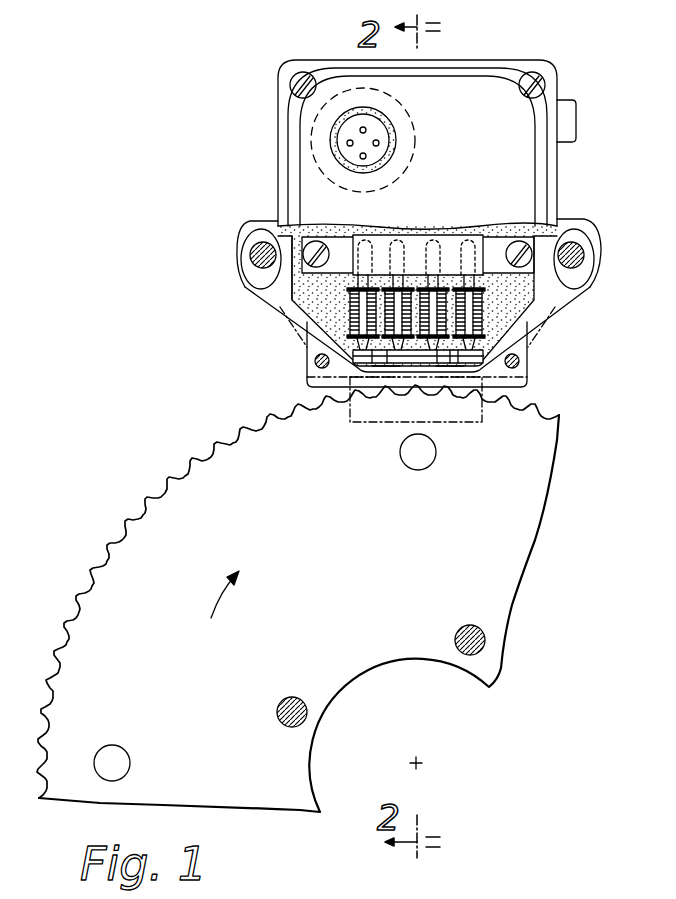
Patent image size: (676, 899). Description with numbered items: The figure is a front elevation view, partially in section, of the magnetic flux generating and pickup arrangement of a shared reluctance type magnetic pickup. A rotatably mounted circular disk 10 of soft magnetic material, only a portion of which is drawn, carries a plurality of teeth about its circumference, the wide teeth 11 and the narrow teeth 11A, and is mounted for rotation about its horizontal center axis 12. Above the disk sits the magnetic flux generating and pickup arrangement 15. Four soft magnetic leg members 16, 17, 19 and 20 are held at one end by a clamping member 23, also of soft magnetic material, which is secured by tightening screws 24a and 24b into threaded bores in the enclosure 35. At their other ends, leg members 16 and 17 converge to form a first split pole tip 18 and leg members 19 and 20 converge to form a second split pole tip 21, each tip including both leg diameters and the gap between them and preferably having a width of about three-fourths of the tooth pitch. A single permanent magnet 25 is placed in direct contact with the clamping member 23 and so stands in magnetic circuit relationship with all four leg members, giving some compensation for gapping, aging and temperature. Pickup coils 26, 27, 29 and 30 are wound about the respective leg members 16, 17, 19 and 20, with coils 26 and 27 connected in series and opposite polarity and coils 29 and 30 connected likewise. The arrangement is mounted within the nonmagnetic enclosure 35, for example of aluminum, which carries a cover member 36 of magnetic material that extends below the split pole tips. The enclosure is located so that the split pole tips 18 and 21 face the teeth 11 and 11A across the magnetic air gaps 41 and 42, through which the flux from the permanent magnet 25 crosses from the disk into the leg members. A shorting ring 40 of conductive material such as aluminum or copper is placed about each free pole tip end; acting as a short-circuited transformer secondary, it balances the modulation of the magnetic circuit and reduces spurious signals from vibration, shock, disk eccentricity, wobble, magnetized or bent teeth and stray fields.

The rotatably mounted circular disk 10 is at (320, 595).
The wide teeth 11 is at (142, 504).
The narrow teeth 11A is at (418, 390).
The horizontal center axis 12 is at (419, 760).
The magnetic flux generating and pickup arrangement 15 is at (443, 317).
The leg member 16 is at (371, 240).
The leg member 17 is at (402, 240).
The first split pole tip 18 is at (386, 391).
The leg member 19 is at (438, 238).
The leg member 20 is at (475, 238).
The second split pole tip 21 is at (481, 399).
The clamping member 23 is at (336, 243).
The screw 24a is at (305, 252).
The screw 24b is at (521, 241).
The permanent magnet 25 is at (422, 236).
The pickup coil 26 is at (350, 291).
The pickup coil 27 is at (386, 307).
The pickup coil 29 is at (490, 316).
The pickup coil 30 is at (488, 335).
The enclosure 35 is at (558, 214).
The cover member 36 is at (474, 94).
The shorting ring 40 is at (318, 383).
The magnetic air gap 41 is at (400, 391).
The magnetic air gap 42 is at (444, 391).